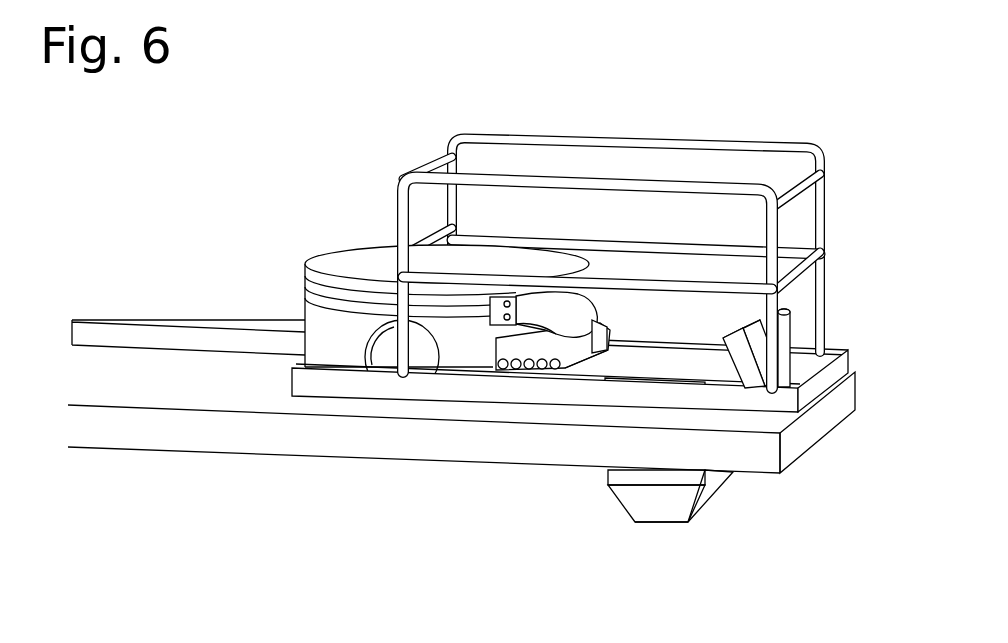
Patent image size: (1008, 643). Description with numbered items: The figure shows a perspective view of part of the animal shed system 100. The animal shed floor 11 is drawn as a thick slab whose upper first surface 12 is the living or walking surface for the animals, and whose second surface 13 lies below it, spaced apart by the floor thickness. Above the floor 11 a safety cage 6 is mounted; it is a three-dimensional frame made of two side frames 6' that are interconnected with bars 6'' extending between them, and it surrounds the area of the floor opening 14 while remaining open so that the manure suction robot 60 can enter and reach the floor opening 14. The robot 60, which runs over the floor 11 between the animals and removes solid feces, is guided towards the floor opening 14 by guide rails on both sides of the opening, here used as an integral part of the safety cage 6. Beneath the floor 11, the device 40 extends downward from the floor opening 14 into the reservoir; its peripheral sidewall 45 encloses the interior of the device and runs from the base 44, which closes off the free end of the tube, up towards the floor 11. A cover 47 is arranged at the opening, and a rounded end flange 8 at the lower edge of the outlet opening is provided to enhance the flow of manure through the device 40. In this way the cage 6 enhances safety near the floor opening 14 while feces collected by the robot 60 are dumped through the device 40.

The animal shed system 100 is at (564, 307).
The safety cage 6 is at (642, 204).
The side frame 6' is at (659, 242).
The bar 6'' is at (827, 196).
The manure suction robot 60 is at (376, 266).
The floor opening 14 is at (673, 370).
The cover 47 is at (717, 373).
The first surface 12 is at (157, 400).
The second surface 13 is at (205, 453).
The animal shed floor 11 is at (461, 441).
The end flange 8 is at (723, 487).
The peripheral sidewall 45 is at (703, 510).
The base 44 is at (650, 523).
The device 40 is at (719, 518).